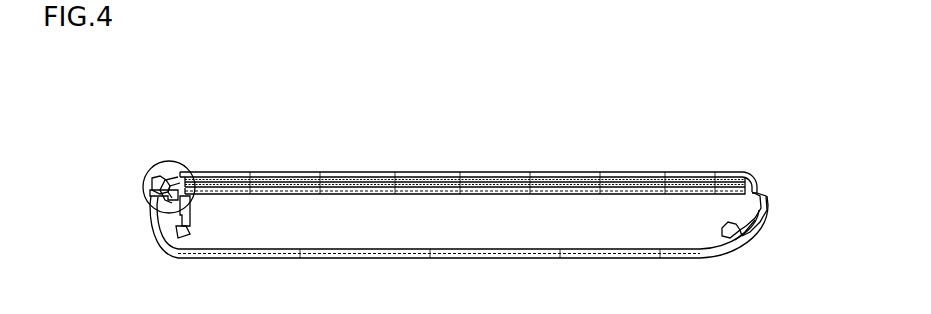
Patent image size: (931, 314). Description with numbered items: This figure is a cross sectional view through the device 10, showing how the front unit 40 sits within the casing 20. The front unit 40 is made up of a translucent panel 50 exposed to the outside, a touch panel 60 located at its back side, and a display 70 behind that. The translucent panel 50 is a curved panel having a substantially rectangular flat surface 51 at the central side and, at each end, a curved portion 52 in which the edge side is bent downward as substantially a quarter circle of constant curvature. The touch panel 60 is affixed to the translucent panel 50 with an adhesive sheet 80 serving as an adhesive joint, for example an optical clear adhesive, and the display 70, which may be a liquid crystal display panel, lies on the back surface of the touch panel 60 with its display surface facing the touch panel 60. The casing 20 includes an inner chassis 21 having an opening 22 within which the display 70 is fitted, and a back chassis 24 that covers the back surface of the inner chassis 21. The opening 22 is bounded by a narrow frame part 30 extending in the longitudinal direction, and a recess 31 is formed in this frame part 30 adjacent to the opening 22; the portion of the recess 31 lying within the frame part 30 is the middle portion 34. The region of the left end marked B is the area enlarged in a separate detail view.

The display device 10 is at (724, 106).
The casing 20 is at (780, 248).
The inner chassis 21 is at (744, 237).
The opening 22 is at (752, 221).
The back chassis 24 is at (722, 253).
The frame part 30 is at (145, 197).
The recess 31 is at (164, 195).
The middle portion 34 is at (143, 184).
The front unit 40 is at (512, 93).
The translucent panel 50 is at (500, 172).
The flat surface 51 is at (376, 171).
The curved portion 52 is at (178, 160).
The touch panel 60 is at (541, 178).
The display 70 is at (584, 183).
The adhesive sheet 80 is at (672, 172).
The detail region B is at (154, 156).